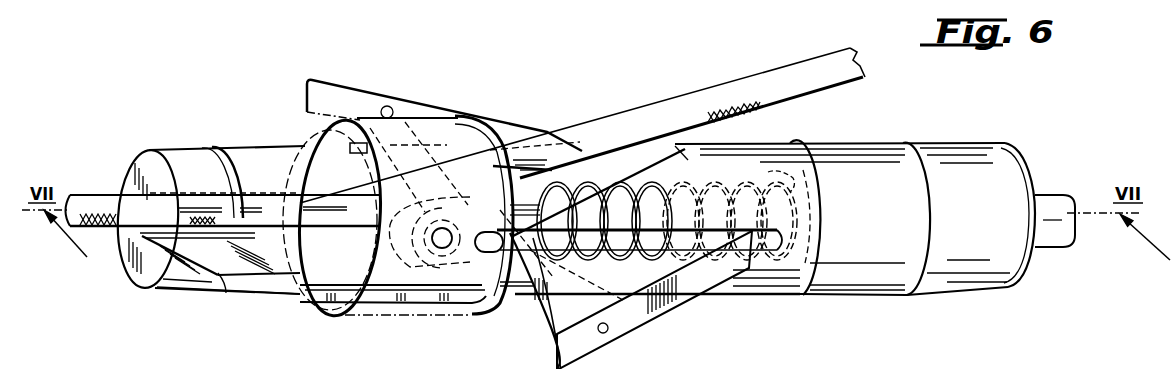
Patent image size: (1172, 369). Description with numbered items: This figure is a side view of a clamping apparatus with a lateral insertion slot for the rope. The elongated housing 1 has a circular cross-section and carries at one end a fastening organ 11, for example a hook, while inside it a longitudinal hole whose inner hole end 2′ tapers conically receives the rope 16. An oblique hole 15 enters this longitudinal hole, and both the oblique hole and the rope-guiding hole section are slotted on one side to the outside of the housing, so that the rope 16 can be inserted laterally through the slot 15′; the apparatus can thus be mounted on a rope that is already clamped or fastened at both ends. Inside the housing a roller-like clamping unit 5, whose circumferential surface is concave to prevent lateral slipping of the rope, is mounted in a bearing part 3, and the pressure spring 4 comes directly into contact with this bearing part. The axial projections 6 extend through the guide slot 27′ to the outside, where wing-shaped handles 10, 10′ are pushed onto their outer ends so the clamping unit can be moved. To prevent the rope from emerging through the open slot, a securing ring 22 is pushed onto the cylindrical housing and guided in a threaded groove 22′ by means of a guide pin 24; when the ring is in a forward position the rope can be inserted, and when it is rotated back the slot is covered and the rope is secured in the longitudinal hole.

The housing 1 is at (188, 167).
The threaded groove 22′ is at (233, 148).
The rope 16 is at (97, 203).
The handle 10 is at (310, 100).
The guide pin 24 is at (360, 120).
The clamping unit 5 is at (413, 203).
The securing ring 22 is at (448, 118).
The axial projections 6 is at (442, 247).
The bearing part 3 is at (483, 262).
The guide slot 27′ is at (775, 263).
The handle 10′ is at (548, 327).
The pressure spring 4 is at (772, 157).
The oblique hole 15 is at (505, 142).
The slot 15′ is at (550, 177).
The inner hole end 2′ is at (810, 183).
The fastening organ 11 is at (1052, 201).